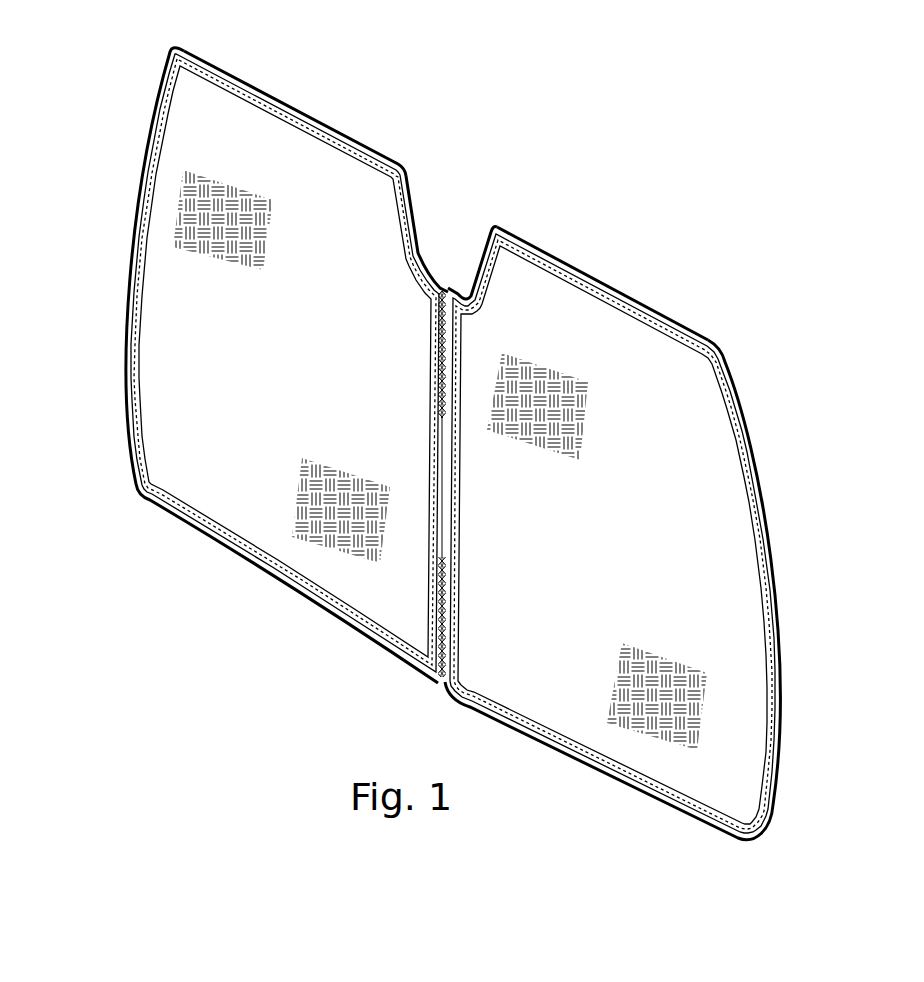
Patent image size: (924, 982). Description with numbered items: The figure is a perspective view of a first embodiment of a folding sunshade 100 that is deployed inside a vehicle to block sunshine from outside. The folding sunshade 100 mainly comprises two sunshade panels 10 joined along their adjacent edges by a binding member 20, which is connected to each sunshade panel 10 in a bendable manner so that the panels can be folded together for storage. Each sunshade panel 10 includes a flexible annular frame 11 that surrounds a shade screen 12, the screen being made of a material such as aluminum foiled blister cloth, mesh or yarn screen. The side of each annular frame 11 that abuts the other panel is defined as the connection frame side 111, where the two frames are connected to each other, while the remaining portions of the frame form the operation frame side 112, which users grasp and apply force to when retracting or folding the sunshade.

The folding sunshade 100 is at (748, 306).
The sunshade panel 10 is at (258, 80).
The annular frame 11 is at (477, 102).
The connection frame side 111 is at (432, 284).
The operation frame side 112 is at (337, 132).
The shade screen 12 is at (208, 208).
The binding member 20 is at (438, 340).